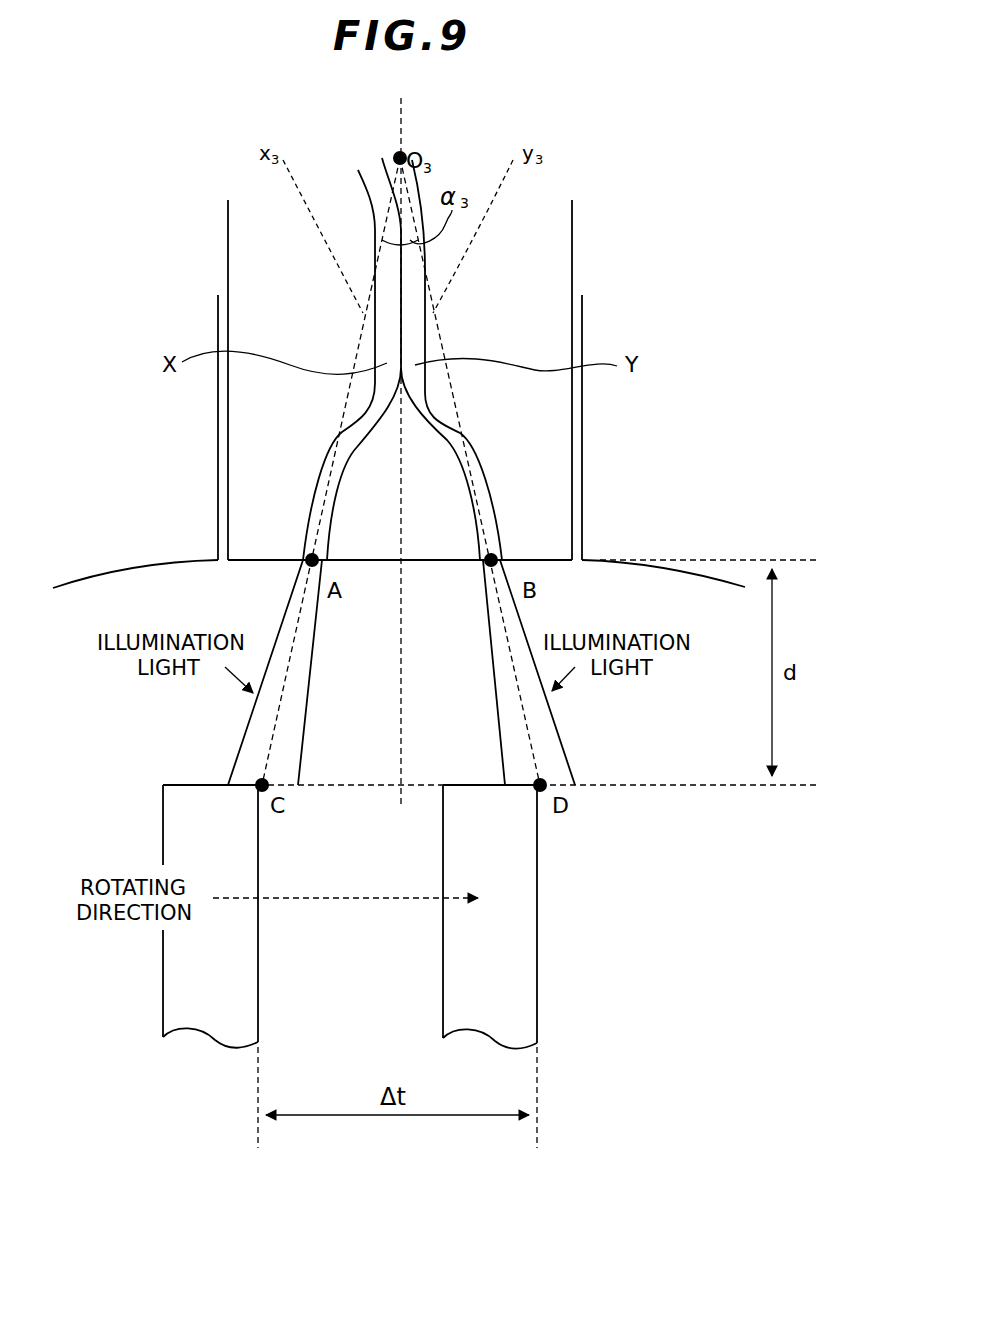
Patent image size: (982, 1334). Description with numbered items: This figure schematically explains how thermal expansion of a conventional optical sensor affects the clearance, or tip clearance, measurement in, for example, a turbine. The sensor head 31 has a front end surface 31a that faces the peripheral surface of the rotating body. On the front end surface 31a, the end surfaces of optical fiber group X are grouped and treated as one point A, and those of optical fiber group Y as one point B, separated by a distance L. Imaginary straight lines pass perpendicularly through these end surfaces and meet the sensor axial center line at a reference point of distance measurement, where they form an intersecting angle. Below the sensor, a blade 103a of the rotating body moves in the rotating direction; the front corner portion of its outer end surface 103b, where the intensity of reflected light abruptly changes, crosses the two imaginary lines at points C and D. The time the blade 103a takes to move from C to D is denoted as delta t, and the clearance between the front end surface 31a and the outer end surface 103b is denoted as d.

The sensor head 31 is at (250, 232).
The front end surface 31a is at (253, 565).
The blade 103a is at (177, 975).
The outer end surface 103b is at (185, 785).